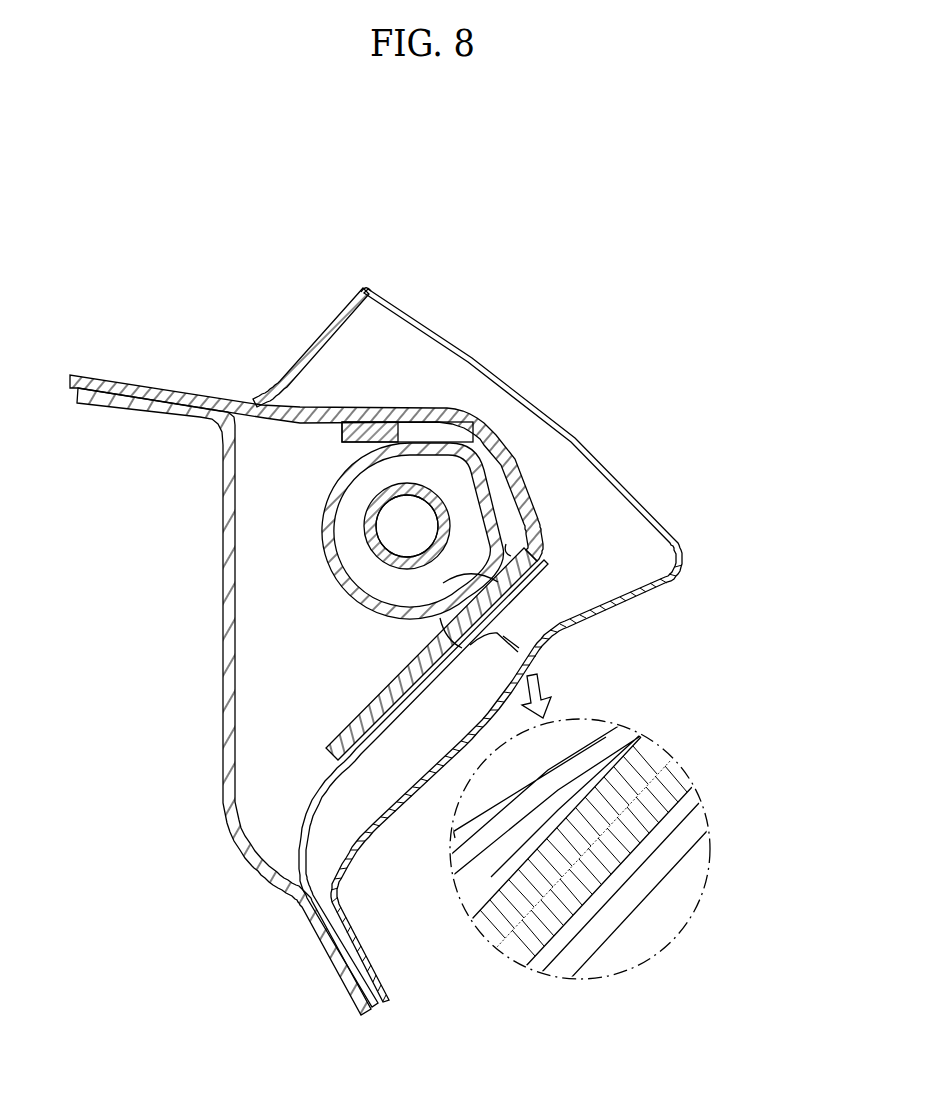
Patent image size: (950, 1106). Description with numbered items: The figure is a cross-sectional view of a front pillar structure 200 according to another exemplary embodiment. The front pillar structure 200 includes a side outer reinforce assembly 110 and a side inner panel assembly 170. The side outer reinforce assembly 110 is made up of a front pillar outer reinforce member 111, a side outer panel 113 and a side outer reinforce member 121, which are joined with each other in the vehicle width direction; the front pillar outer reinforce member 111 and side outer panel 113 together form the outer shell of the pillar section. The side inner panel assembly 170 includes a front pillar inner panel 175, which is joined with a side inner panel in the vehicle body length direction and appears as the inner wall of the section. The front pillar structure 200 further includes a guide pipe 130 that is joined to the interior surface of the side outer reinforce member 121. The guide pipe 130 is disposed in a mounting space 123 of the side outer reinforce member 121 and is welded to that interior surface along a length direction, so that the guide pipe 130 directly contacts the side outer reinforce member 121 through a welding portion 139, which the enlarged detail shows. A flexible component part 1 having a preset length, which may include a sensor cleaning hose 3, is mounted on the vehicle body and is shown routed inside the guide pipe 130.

The front pillar structure 200 is at (440, 182).
The side outer reinforce assembly 110 is at (467, 635).
The front pillar outer reinforce member 111 is at (304, 400).
The side outer panel 113 is at (497, 372).
The side outer reinforce member 121 is at (502, 460).
The mounting space 123 is at (510, 552).
The guide pipe 130 is at (318, 571).
The welding portion 139 is at (452, 870).
The side inner panel assembly 170 is at (224, 701).
The front pillar inner panel 175 is at (225, 673).
The flexible component part 1 is at (306, 511).
The sensor cleaning hose 3 is at (370, 526).